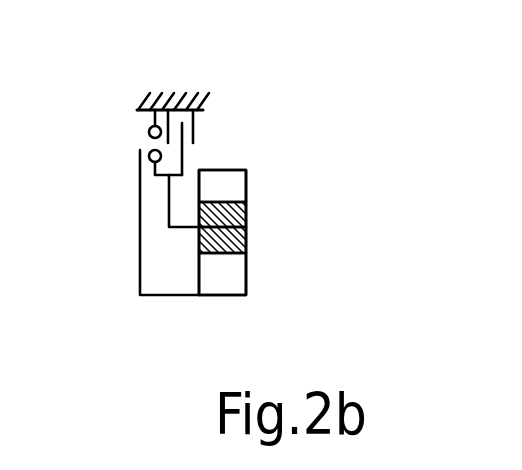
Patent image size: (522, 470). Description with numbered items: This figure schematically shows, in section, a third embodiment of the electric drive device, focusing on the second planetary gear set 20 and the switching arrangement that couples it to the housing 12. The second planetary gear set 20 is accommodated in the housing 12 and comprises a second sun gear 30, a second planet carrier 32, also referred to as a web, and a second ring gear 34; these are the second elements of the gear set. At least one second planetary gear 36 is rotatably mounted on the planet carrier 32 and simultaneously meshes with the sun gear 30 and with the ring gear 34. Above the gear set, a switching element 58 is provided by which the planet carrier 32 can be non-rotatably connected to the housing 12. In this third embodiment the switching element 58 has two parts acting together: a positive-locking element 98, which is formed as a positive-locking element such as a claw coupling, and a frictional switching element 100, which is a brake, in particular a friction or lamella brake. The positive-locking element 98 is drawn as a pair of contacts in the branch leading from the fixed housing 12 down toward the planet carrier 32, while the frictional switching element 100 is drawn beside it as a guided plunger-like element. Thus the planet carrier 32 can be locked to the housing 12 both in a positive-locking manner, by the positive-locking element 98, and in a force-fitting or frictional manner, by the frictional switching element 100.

The housing 12 is at (196, 101).
The frictional switching element 100 is at (212, 115).
The switching element 58 is at (124, 137).
The positive-locking element 98 is at (123, 164).
The second planetary gear set 20 is at (288, 162).
The second ring gear 34 is at (228, 188).
The second planet carrier 32 is at (247, 227).
The second planetary gear 36 is at (247, 245).
The second sun gear 30 is at (247, 287).